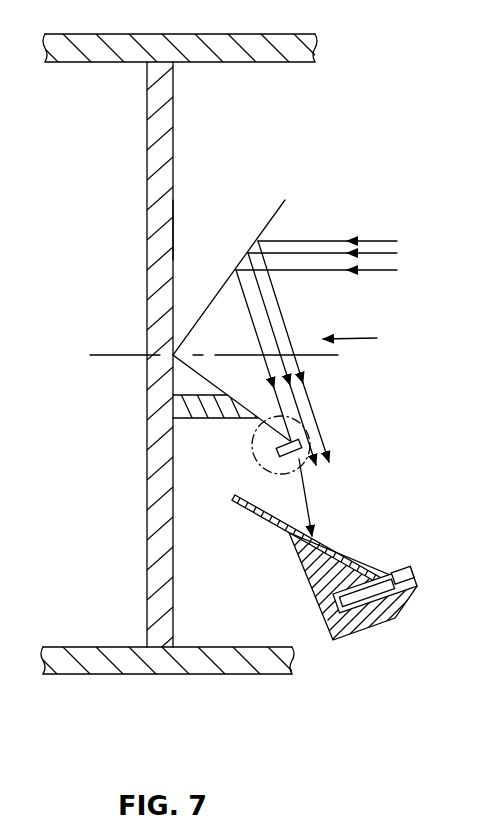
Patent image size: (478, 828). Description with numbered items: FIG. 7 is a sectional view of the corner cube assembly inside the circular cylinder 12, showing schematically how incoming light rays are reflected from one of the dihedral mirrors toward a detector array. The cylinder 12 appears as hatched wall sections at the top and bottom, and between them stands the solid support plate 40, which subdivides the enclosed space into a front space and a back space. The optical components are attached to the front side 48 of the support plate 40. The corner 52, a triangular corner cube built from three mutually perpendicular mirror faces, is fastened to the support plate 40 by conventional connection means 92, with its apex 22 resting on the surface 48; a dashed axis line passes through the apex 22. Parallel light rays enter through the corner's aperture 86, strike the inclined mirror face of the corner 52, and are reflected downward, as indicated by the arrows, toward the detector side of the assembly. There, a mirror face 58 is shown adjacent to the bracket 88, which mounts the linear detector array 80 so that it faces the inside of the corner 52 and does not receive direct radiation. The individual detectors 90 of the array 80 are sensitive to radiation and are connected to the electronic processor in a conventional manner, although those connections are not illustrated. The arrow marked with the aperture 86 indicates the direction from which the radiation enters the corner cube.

The cylinder 12 is at (210, 34).
The support plate 40 is at (157, 509).
The front side 48 is at (173, 232).
The corner 52 is at (261, 214).
The apex 22 is at (177, 353).
The connection means 92 is at (215, 414).
The aperture 86 is at (364, 339).
The mirror face 58 is at (275, 526).
The bracket 88 is at (318, 583).
The linear detector array 80 is at (398, 592).
The individual detector 90 is at (402, 571).